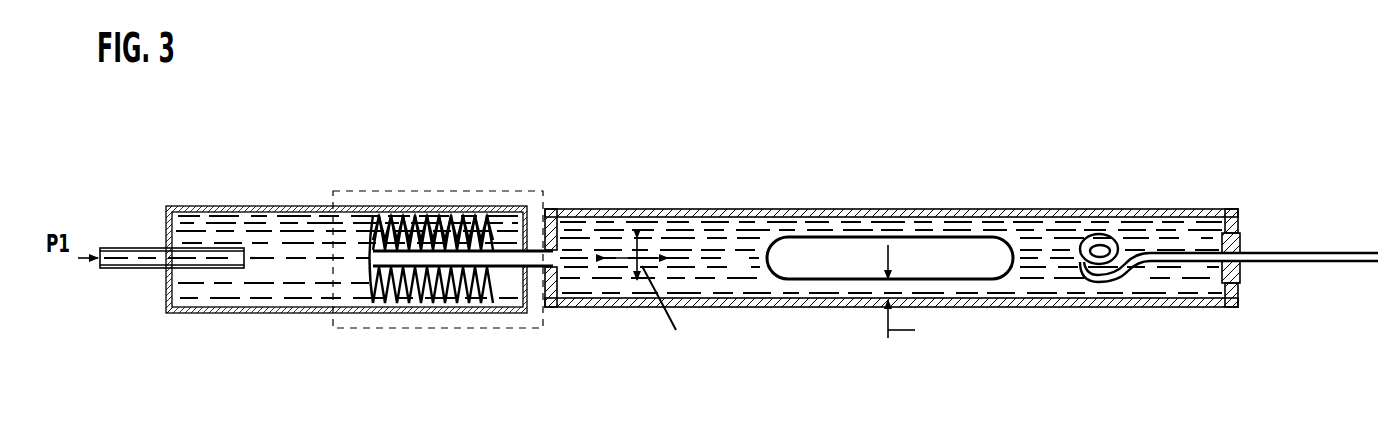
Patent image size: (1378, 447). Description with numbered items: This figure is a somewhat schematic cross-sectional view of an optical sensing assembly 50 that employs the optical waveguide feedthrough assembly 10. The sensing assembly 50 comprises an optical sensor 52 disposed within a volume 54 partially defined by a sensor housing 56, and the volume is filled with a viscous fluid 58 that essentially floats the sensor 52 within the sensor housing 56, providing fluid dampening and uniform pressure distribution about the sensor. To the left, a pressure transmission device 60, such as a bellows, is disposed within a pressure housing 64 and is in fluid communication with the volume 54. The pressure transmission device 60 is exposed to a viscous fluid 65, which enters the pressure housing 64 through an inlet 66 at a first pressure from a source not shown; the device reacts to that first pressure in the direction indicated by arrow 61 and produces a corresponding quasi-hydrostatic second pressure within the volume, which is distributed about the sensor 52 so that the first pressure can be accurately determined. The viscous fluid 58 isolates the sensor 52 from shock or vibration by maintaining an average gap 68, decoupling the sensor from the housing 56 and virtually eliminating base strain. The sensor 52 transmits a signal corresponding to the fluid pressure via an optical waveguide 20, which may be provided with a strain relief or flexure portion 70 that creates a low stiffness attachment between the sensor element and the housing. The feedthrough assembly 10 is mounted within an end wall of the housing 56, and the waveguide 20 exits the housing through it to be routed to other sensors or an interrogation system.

The optical waveguide feedthrough assembly 10 is at (1242, 240).
The optical waveguide 20 is at (1317, 252).
The optical sensing assembly 50 is at (961, 236).
The optical sensor 52 is at (918, 237).
The volume 54 is at (1055, 283).
The sensor housing 56 is at (830, 209).
The viscous fluid 58 is at (700, 237).
The pressure transmission device 60 is at (443, 260).
The arrow 61 is at (378, 347).
The pressure housing 64 is at (254, 318).
The viscous fluid 65 is at (249, 218).
The inlet 66 is at (140, 248).
The average gap 68 is at (918, 297).
The flexure portion 70 is at (1112, 238).